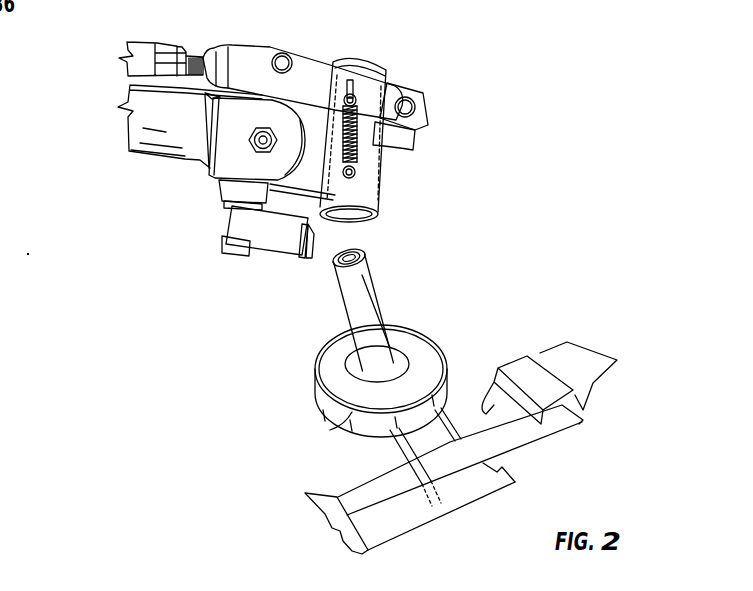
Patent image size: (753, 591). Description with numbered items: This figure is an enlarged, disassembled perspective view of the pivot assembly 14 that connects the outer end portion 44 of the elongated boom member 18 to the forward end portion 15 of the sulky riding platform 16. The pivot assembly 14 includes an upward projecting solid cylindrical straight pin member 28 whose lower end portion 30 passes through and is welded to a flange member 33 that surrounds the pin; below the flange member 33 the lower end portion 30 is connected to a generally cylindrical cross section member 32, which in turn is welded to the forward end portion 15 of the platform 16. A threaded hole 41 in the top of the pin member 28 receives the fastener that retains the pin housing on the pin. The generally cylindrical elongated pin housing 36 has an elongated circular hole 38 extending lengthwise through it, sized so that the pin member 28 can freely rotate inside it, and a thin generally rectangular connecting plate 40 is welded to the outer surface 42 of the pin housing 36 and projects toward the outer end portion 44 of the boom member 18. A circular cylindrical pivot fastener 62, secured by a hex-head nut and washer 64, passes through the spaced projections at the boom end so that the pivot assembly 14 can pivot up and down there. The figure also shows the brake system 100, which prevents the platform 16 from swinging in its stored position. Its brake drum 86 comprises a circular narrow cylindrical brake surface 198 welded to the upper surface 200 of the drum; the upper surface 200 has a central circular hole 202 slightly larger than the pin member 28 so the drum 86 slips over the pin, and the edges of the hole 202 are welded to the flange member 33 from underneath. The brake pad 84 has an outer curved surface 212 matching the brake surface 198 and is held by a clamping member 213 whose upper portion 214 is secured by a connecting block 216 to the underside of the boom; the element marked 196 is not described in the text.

The upper assembly 196 is at (85, 5).
The boom member 18 is at (128, 93).
The outer end portion 44 is at (155, 115).
The connecting plate 40 is at (312, 115).
The pivot fastener 62 is at (263, 131).
The pin housing 36 is at (405, 170).
The outer surface 42 is at (350, 96).
The hole 38 is at (380, 80).
The pivot assembly 14 is at (473, 207).
The connecting block 216 is at (217, 182).
The hex-head nut and washer 64 is at (268, 160).
The brake pad 84 is at (263, 240).
The clamping member 213 is at (240, 256).
The outer curved surface 212 is at (300, 257).
The upper portion 214 is at (312, 240).
The brake system 100 is at (318, 239).
The pin member 28 is at (370, 317).
The threaded hole 41 is at (366, 248).
The hole 202 is at (352, 362).
The upper surface 200 is at (330, 379).
The brake drum 86 is at (317, 408).
The lower end portion 30 is at (385, 372).
The flange member 33 is at (385, 372).
The forward end portion 15 is at (447, 445).
The brake surface 198 is at (452, 370).
The cylindrical cross section member 32 is at (455, 440).
The sulky riding platform 16 is at (462, 487).